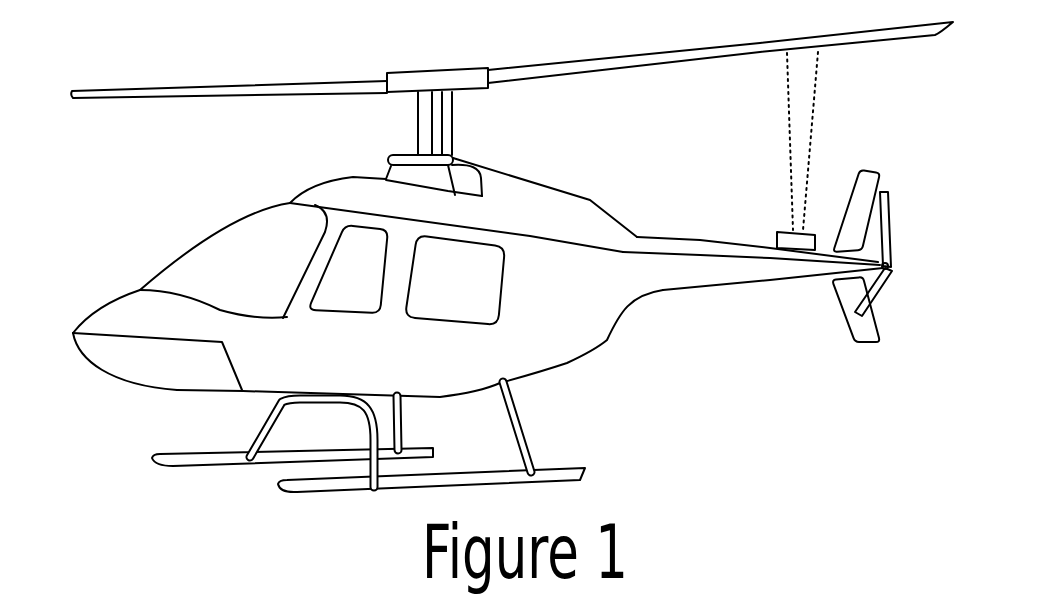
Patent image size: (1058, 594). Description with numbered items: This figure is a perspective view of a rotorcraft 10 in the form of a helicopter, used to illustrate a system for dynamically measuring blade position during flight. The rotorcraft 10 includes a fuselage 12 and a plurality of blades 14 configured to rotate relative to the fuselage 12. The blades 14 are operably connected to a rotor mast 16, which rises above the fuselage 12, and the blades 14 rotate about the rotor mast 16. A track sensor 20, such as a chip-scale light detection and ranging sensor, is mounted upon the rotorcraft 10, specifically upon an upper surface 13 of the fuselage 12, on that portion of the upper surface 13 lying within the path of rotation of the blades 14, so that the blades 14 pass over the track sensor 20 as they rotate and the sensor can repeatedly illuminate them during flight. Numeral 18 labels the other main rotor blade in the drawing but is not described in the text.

The rotorcraft 10 is at (497, 246).
The fuselage 12 is at (543, 355).
The upper surface 13 is at (663, 237).
The blades 14 is at (632, 57).
The rotor mast 16 is at (442, 132).
The main rotor blade 18 is at (72, 95).
The track sensor 20 is at (782, 232).